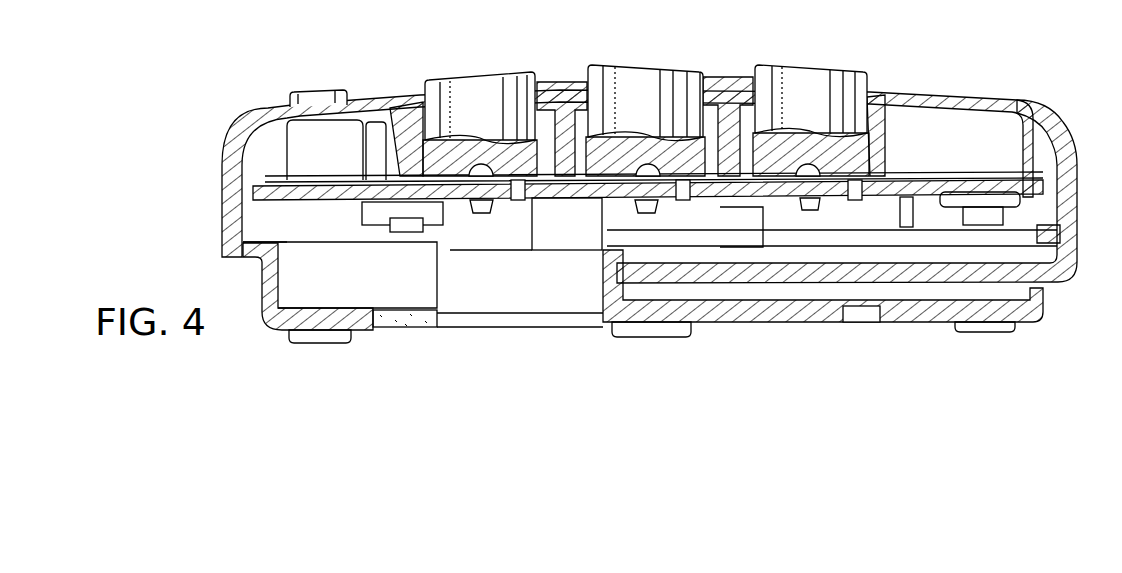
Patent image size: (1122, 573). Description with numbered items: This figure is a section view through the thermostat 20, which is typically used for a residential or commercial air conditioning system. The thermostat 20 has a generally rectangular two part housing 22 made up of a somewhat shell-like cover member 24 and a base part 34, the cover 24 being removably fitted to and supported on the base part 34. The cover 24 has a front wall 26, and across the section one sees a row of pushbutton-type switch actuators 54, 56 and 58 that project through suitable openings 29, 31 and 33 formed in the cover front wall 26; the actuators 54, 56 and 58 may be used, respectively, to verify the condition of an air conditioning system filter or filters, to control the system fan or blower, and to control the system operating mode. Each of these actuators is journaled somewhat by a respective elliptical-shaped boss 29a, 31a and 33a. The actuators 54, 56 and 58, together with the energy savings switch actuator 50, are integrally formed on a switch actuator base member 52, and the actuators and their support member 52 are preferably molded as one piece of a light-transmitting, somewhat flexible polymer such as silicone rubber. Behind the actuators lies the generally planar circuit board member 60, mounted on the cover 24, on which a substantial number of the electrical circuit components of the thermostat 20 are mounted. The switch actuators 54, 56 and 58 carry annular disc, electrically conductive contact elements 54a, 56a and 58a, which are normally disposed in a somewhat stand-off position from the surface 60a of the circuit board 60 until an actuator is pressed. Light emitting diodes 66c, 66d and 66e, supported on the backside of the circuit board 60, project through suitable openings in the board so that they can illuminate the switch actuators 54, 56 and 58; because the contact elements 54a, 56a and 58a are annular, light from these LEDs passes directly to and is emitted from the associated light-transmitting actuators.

The thermostat 20 is at (957, 66).
The two part housing 22 is at (1026, 96).
The cover member 24 is at (1060, 124).
The front wall 26 is at (358, 105).
The opening 29 is at (430, 97).
The opening 31 is at (608, 90).
The opening 33 is at (762, 78).
The base part 34 is at (942, 316).
The energy savings switch actuator 50 is at (296, 94).
The switch actuator base member 52 is at (388, 125).
The switch actuator 54 is at (492, 72).
The switch actuator 56 is at (652, 70).
The switch actuator 58 is at (828, 72).
The circuit board member 60 is at (924, 182).
The surface of circuit board 60a is at (722, 83).
The elliptical-shaped boss 29a is at (447, 190).
The elliptical-shaped boss 31a is at (603, 197).
The elliptical-shaped boss 33a is at (775, 187).
The contact element 54a is at (518, 200).
The contact element 56a is at (683, 193).
The contact element 58a is at (855, 190).
The light emitting diode 66c is at (820, 190).
The light emitting diode 66d is at (650, 195).
The light emitting diode 66e is at (476, 203).